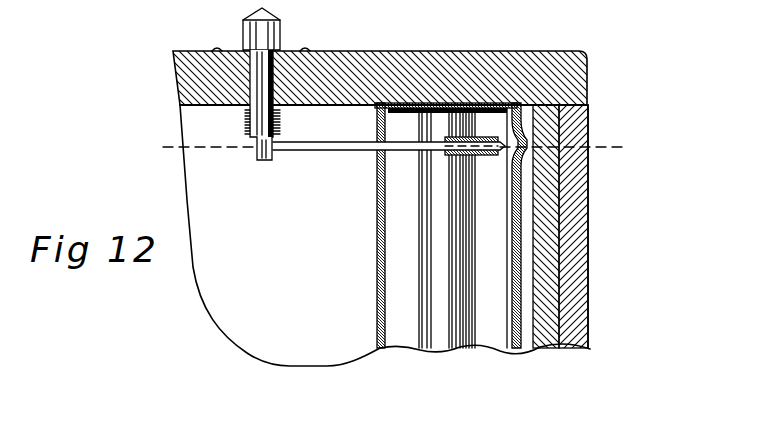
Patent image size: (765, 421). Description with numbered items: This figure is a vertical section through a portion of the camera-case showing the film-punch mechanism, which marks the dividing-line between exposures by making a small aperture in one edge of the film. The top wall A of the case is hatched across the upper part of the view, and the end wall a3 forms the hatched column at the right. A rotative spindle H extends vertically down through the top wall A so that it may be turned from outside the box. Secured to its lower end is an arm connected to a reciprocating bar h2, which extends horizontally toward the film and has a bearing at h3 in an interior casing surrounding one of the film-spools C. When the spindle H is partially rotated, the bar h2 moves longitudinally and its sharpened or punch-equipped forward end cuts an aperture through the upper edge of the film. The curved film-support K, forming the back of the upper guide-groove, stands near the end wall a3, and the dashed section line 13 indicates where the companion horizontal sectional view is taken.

The top wall A is at (370, 63).
The rotative spindle H is at (244, 110).
The reciprocating bar h2 is at (358, 152).
The bearing h3 is at (491, 157).
The film-spool C is at (435, 256).
The curved film-support K is at (518, 340).
The end wall a3 is at (575, 210).
The section line 13- 13 is at (396, 146).